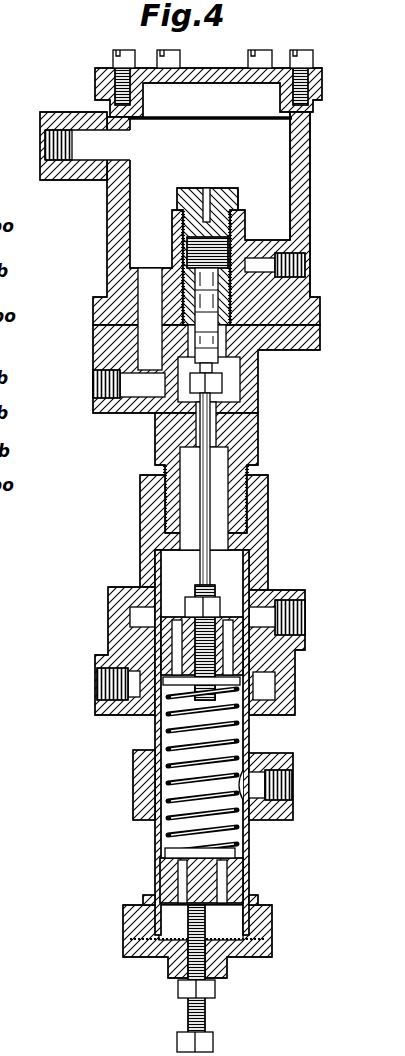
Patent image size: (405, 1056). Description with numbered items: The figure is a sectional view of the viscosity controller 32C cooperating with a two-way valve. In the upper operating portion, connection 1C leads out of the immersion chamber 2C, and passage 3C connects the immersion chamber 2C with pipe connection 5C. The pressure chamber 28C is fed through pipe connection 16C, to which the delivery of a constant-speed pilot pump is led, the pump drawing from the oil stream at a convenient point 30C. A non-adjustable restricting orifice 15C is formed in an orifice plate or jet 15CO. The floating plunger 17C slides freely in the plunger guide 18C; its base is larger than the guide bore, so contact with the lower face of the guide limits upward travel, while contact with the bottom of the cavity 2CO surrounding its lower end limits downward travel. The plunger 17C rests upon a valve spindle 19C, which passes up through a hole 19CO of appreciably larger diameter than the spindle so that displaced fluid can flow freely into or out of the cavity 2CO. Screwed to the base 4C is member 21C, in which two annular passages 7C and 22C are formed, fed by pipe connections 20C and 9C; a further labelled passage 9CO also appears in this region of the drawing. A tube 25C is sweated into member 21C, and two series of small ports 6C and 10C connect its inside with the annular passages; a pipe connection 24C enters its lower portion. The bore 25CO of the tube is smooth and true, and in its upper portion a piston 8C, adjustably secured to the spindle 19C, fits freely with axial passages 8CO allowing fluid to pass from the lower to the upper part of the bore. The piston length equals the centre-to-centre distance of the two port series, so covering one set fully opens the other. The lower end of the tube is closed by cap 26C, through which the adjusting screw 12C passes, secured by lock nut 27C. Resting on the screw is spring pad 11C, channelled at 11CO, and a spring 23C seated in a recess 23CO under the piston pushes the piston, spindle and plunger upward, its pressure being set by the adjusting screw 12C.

The connection 1C is at (45, 142).
The immersion chamber 2C is at (135, 222).
The cavity 2CO is at (256, 408).
The passage 3C is at (150, 300).
The base 4C is at (105, 348).
The pipe connection 5C is at (95, 386).
The series of small holes or ports 6C is at (128, 612).
The annular passage 7C is at (130, 618).
The piston 8C is at (172, 625).
The axial passages 8CO is at (175, 640).
The pipe connection 9C is at (96, 685).
The port passage 9CO is at (260, 612).
The series of small holes or ports 10C is at (155, 692).
The spring pad 11C is at (156, 877).
The channel 11CO is at (160, 870).
The adjusting screw 12C is at (188, 1012).
The restricting orifice 15C is at (210, 190).
The orifice plate or jet 15CO is at (240, 196).
The pipe connection 16C is at (306, 265).
The floating plunger 17C is at (210, 290).
The plunger guide 18C is at (250, 372).
The valve spindle 19C is at (206, 478).
The hole 19CO is at (196, 428).
The pipe connection 20C is at (306, 608).
The member 21C is at (288, 656).
The annular passage 22C is at (262, 703).
The spring 23C is at (226, 738).
The recess 23CO is at (256, 682).
The pipe connection 24C is at (294, 800).
The tube 25C is at (153, 736).
The bore 25CO is at (251, 868).
The cap 26C is at (273, 925).
The lock nut 27C is at (178, 992).
The pressure chamber 28C is at (190, 250).
The point in the oil stream 30C is at (292, 167).
The viscosity controller 32C is at (268, 508).